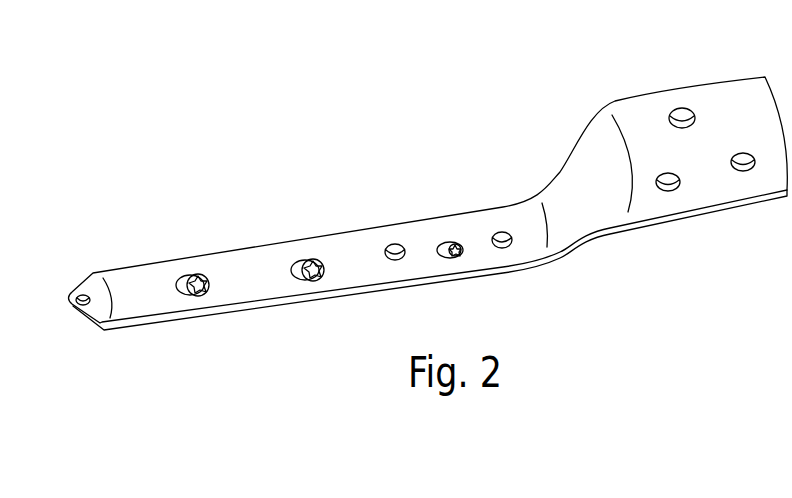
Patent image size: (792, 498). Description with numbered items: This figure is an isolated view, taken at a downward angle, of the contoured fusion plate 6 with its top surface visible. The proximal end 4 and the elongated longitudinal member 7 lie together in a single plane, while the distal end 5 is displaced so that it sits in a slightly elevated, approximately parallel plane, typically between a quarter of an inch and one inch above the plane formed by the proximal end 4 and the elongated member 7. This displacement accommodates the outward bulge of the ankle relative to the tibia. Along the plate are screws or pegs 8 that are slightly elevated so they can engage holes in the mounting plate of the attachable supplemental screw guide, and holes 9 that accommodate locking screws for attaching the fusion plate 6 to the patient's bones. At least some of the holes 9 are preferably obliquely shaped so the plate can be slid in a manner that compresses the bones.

The proximal end 4 is at (92, 285).
The distal end 5 is at (708, 93).
The contoured fusion plate 6 is at (382, 176).
The elongated longitudinal member 7 is at (453, 223).
The screws or pegs 8 is at (200, 277).
The holes 9 is at (395, 259).